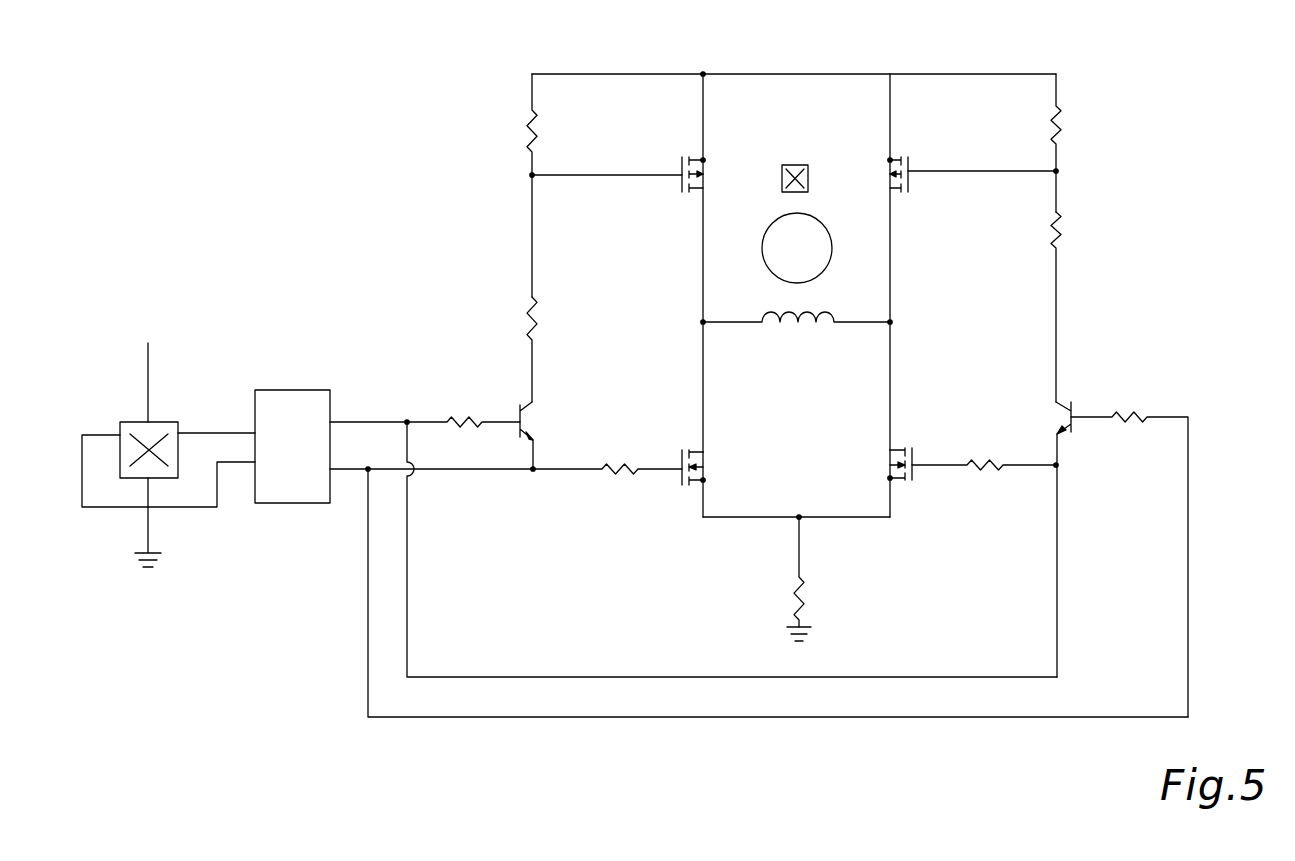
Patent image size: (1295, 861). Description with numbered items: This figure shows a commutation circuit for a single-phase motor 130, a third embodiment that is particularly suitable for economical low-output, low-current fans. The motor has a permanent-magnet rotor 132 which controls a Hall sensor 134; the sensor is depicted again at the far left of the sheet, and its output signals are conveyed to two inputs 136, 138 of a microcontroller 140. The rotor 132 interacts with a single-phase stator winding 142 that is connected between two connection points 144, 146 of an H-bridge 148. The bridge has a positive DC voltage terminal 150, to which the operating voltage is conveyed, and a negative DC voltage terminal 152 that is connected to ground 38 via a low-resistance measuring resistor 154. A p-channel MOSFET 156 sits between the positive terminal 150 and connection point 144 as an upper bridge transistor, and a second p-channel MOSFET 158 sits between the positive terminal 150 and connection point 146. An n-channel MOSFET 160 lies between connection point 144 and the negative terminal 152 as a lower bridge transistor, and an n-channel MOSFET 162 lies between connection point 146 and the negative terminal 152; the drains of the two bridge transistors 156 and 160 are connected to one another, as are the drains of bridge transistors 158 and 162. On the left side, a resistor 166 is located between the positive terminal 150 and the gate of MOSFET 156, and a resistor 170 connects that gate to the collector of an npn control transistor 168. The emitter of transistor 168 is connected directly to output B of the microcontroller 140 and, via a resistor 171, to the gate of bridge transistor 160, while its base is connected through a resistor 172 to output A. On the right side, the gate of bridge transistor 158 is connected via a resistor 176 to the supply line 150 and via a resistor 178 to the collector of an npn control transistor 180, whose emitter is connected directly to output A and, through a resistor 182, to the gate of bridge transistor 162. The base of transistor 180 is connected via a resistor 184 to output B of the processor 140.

The ground 38 is at (800, 642).
The single-phase motor 130 is at (743, 278).
The permanent-magnet rotor 132 is at (831, 262).
The Hall sensor 134 is at (782, 175).
The input 136 is at (238, 463).
The input 138 is at (208, 432).
The microcontroller 140 is at (292, 446).
The single-phase stator winding 142 is at (782, 326).
The connection point 144 is at (703, 322).
The connection point 146 is at (890, 322).
The H-bridge 148 is at (798, 119).
The positive DC voltage terminal 150 is at (835, 74).
The negative DC voltage terminal 152 is at (766, 520).
The measuring resistor 154 is at (806, 600).
The p-channel MOSFET 156 is at (682, 162).
The p-channel MOSFET 158 is at (910, 160).
The n-channel MOSFET 160 is at (682, 456).
The n-channel MOSFET 162 is at (914, 452).
The resistor 166 is at (532, 134).
The npn control transistor 168 is at (520, 410).
The resistor 170 is at (532, 314).
The resistor 171 is at (620, 474).
The resistor 172 is at (462, 420).
The resistor 176 is at (1058, 126).
The resistor 178 is at (1058, 228).
The npn control transistor 180 is at (1075, 406).
The resistor 182 is at (986, 472).
The resistor 184 is at (1128, 426).